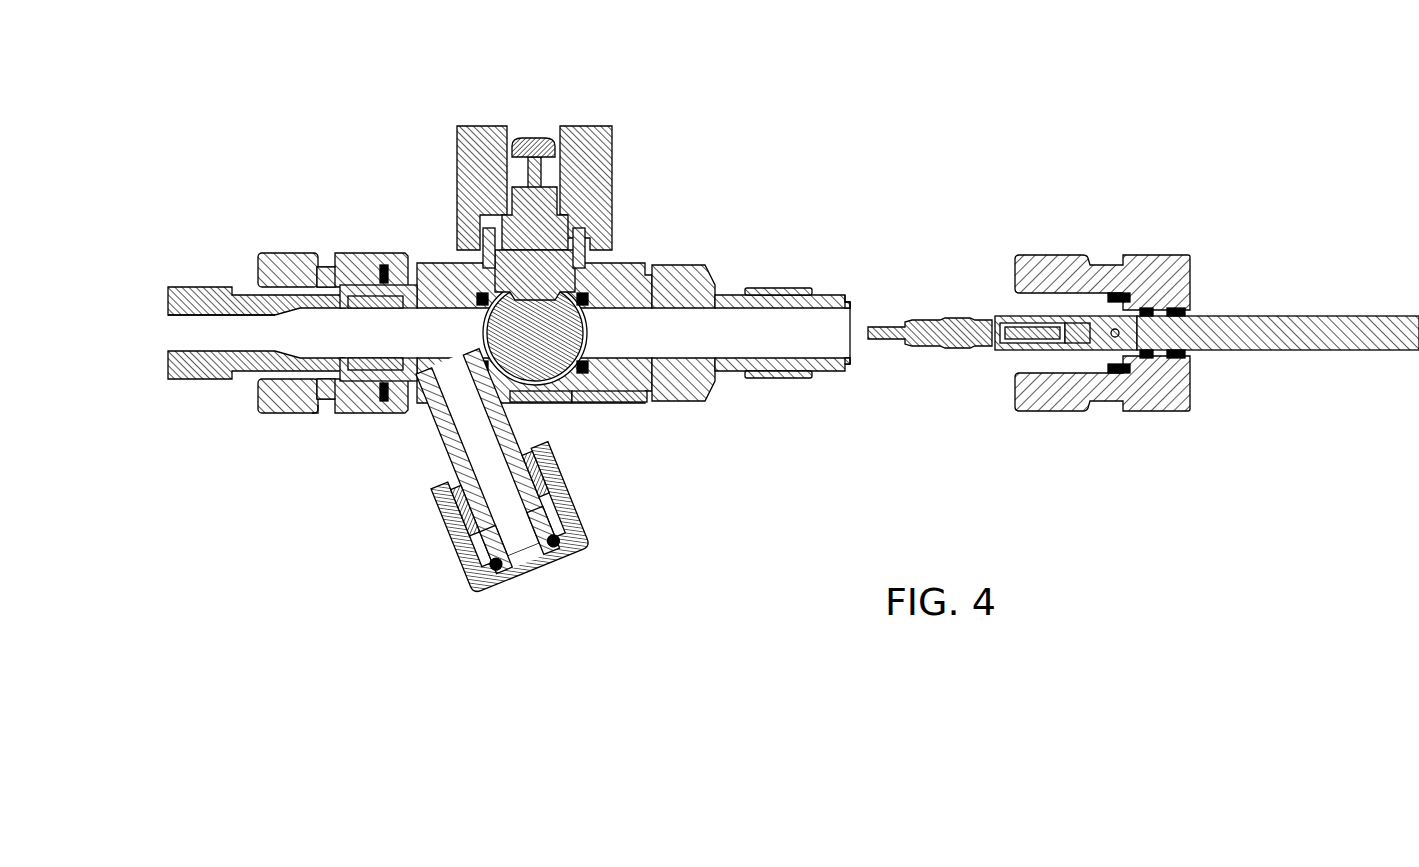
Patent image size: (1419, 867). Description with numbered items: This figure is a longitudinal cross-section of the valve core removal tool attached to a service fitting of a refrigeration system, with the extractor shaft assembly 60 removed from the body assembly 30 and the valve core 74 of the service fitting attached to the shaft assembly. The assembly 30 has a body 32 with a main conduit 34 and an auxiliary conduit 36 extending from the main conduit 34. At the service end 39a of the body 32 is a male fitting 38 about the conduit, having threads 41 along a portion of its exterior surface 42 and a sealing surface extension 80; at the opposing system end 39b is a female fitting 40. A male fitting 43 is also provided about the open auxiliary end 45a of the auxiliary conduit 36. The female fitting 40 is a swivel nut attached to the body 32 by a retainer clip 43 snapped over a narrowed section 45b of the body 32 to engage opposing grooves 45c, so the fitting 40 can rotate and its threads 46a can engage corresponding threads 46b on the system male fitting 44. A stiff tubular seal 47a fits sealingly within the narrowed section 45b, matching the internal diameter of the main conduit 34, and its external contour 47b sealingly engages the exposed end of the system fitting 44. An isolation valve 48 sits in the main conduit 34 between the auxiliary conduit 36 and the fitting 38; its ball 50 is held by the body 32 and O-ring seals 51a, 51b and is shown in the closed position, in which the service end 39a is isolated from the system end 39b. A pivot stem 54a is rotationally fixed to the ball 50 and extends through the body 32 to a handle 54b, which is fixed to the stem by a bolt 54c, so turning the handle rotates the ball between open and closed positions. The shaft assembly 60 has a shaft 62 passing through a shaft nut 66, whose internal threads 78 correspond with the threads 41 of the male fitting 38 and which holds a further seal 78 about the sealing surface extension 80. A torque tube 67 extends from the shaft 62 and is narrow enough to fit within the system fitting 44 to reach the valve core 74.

The assembly 30 is at (653, 112).
The body 32 is at (697, 258).
The main conduit 34 is at (807, 300).
The auxiliary conduit 36 is at (440, 455).
The male fitting 38 is at (813, 373).
The service end 39a is at (853, 320).
The system end 39b is at (318, 410).
The female fitting 40 is at (363, 260).
The threads 41 is at (780, 378).
The exterior surface 42 is at (740, 293).
The retainer clip 43 is at (403, 418).
The system male fitting 44 is at (190, 287).
The open auxiliary end 45a is at (525, 562).
The narrowed section 45b is at (360, 410).
The opposing grooves 45c is at (402, 268).
The threads 46a is at (337, 262).
The threads 46b is at (262, 290).
The tubular seal 47a is at (362, 320).
The external contour 47b is at (347, 357).
The isolation valve 48 is at (590, 265).
The ball 50 is at (557, 340).
The O-ring seal 51a is at (510, 405).
The O-ring seal 51b is at (590, 405).
The pivot stem 54a is at (555, 222).
The handle 54b is at (507, 125).
The bolt 54c is at (532, 137).
The extractor shaft assembly 60 is at (1275, 282).
The shaft 62 is at (1290, 348).
The shaft nut 66 is at (1020, 255).
The torque tube 67 is at (1090, 355).
The valve core 74 is at (935, 362).
The internal threads 78 is at (1070, 290).
The sealing surface extension 80 is at (842, 368).